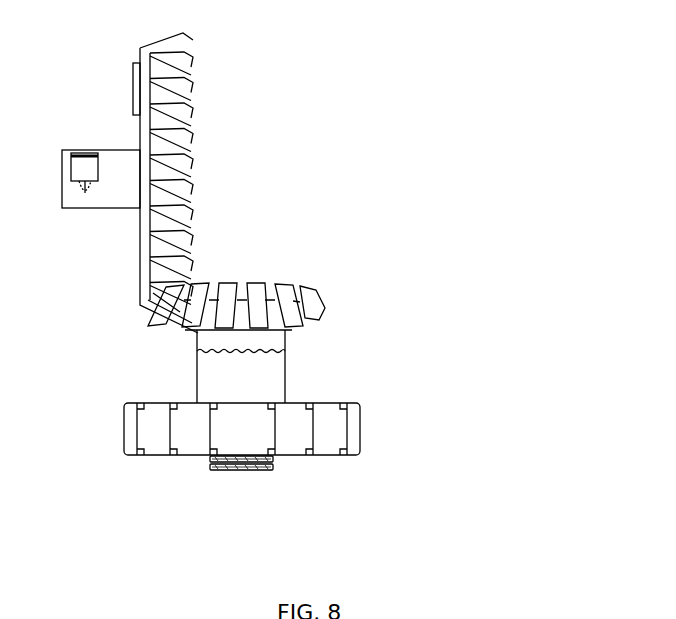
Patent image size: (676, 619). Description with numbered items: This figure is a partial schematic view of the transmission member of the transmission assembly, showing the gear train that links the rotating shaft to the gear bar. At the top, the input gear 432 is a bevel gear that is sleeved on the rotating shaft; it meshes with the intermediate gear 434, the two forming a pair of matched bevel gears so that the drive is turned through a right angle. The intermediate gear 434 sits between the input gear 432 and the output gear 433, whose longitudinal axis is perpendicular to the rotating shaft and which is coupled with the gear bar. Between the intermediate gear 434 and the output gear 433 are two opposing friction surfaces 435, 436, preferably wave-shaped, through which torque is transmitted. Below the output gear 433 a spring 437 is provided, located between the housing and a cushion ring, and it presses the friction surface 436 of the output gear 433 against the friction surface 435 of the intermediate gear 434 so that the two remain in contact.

The input gear 432 is at (337, 58).
The output gear 433 is at (432, 343).
The intermediate gear 434 is at (392, 140).
The friction surface 435 is at (440, 250).
The friction surface 436 is at (373, 315).
The spring 437 is at (402, 525).